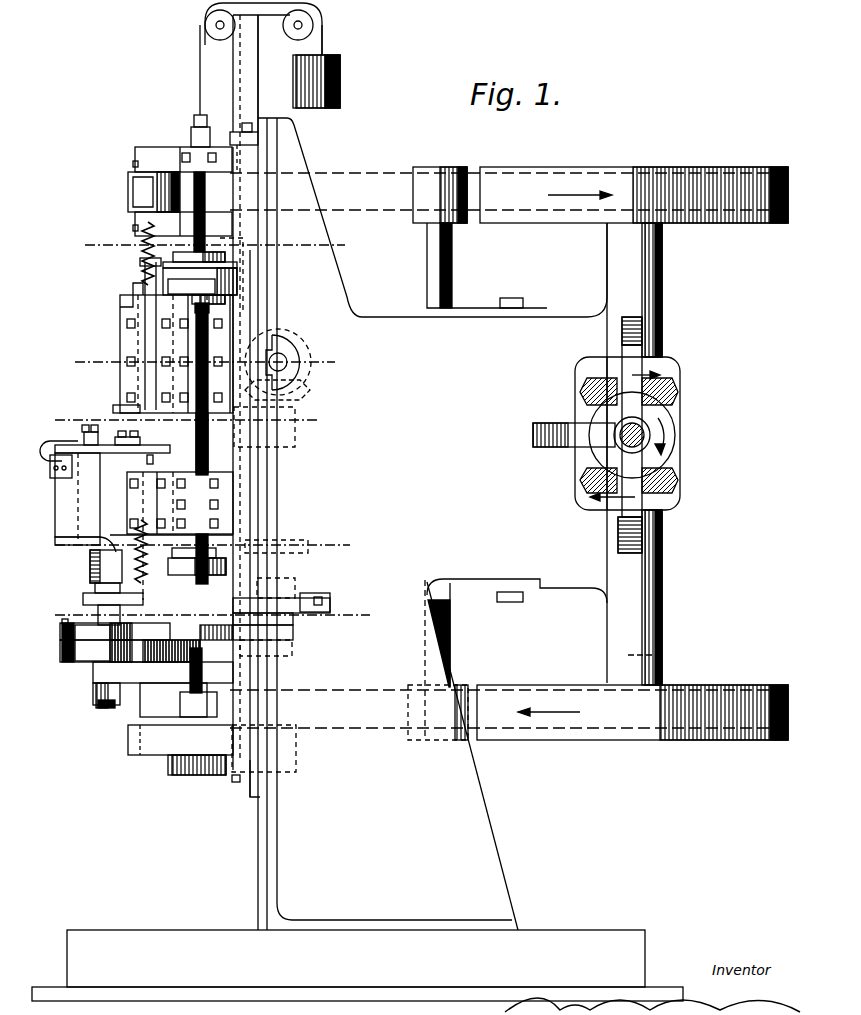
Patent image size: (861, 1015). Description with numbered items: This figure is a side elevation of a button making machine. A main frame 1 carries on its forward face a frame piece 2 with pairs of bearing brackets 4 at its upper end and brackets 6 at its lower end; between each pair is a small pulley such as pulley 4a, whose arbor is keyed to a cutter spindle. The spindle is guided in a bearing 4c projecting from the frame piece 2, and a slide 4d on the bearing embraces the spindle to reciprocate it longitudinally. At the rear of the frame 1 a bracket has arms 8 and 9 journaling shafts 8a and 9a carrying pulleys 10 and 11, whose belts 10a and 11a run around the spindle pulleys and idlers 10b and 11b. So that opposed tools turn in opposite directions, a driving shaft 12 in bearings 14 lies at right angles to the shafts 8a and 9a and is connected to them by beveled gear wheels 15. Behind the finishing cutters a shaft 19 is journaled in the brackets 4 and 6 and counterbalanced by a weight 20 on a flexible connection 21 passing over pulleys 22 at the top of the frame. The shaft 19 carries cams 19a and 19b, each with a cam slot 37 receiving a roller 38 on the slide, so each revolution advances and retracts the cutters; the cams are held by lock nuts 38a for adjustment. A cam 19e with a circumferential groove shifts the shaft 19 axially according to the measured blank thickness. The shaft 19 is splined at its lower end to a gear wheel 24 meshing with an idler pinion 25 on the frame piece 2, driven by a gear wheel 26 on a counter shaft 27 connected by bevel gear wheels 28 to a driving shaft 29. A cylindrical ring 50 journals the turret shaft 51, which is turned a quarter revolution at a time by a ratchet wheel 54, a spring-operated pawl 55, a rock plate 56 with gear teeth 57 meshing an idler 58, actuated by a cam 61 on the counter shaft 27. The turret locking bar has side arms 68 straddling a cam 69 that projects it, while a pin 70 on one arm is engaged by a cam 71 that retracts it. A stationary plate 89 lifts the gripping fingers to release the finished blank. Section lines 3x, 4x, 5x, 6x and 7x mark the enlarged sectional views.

The main frame 1 is at (357, 508).
The frame piece 2 is at (246, 406).
The section line 3x is at (211, 245).
The bearing brackets 4 is at (140, 150).
The pulley 4a is at (154, 192).
The bearing 4c is at (126, 338).
The slide 4d is at (144, 289).
The section line 4x is at (207, 362).
The section line 5x is at (210, 612).
The bearing brackets 6 is at (166, 722).
The section line 6x is at (216, 418).
The section line 7x is at (200, 540).
The arm 8 is at (665, 330).
The shaft 8a is at (630, 300).
The arm 9 is at (650, 610).
The shaft 9a is at (662, 655).
The pulley 10 is at (565, 185).
The belt 10a is at (397, 181).
The idler 10b is at (440, 192).
The pulley 11 is at (685, 695).
The belt 11a is at (412, 738).
The idler 11b is at (440, 740).
The driving shaft 12 is at (640, 432).
The bearings 14 is at (645, 448).
The beveled gear wheels 15 is at (675, 397).
The shaft 19 is at (211, 444).
The cam 19a is at (237, 275).
The cam 19b is at (222, 640).
The cam 19e is at (222, 560).
The weight 20 is at (316, 66).
The flexible connection 21 is at (199, 83).
The pulleys 22 is at (204, 16).
The gear wheel 24 is at (203, 770).
The idler pinion 25 is at (236, 762).
The gear wheel 26 is at (297, 770).
The counter shaft 27 is at (300, 486).
The bevel gear wheels 28 is at (306, 347).
The driving shaft 29 is at (280, 363).
The cam slot 37 is at (240, 285).
The roller 38 is at (150, 274).
The lock nuts 38a is at (222, 253).
The cylindrical ring 50 is at (68, 503).
The shaft 51 is at (100, 608).
The ratchet wheel 54 is at (96, 640).
The pawl 55 is at (66, 631).
The rock plate 56 is at (98, 650).
The gear teeth 57 is at (228, 672).
The idler 58 is at (135, 680).
The cam 61 is at (293, 655).
The side arms 68 is at (292, 626).
The cam 69 is at (294, 612).
The pin 70 is at (318, 592).
The cam 71 is at (302, 592).
The stationary plate 89 is at (76, 549).